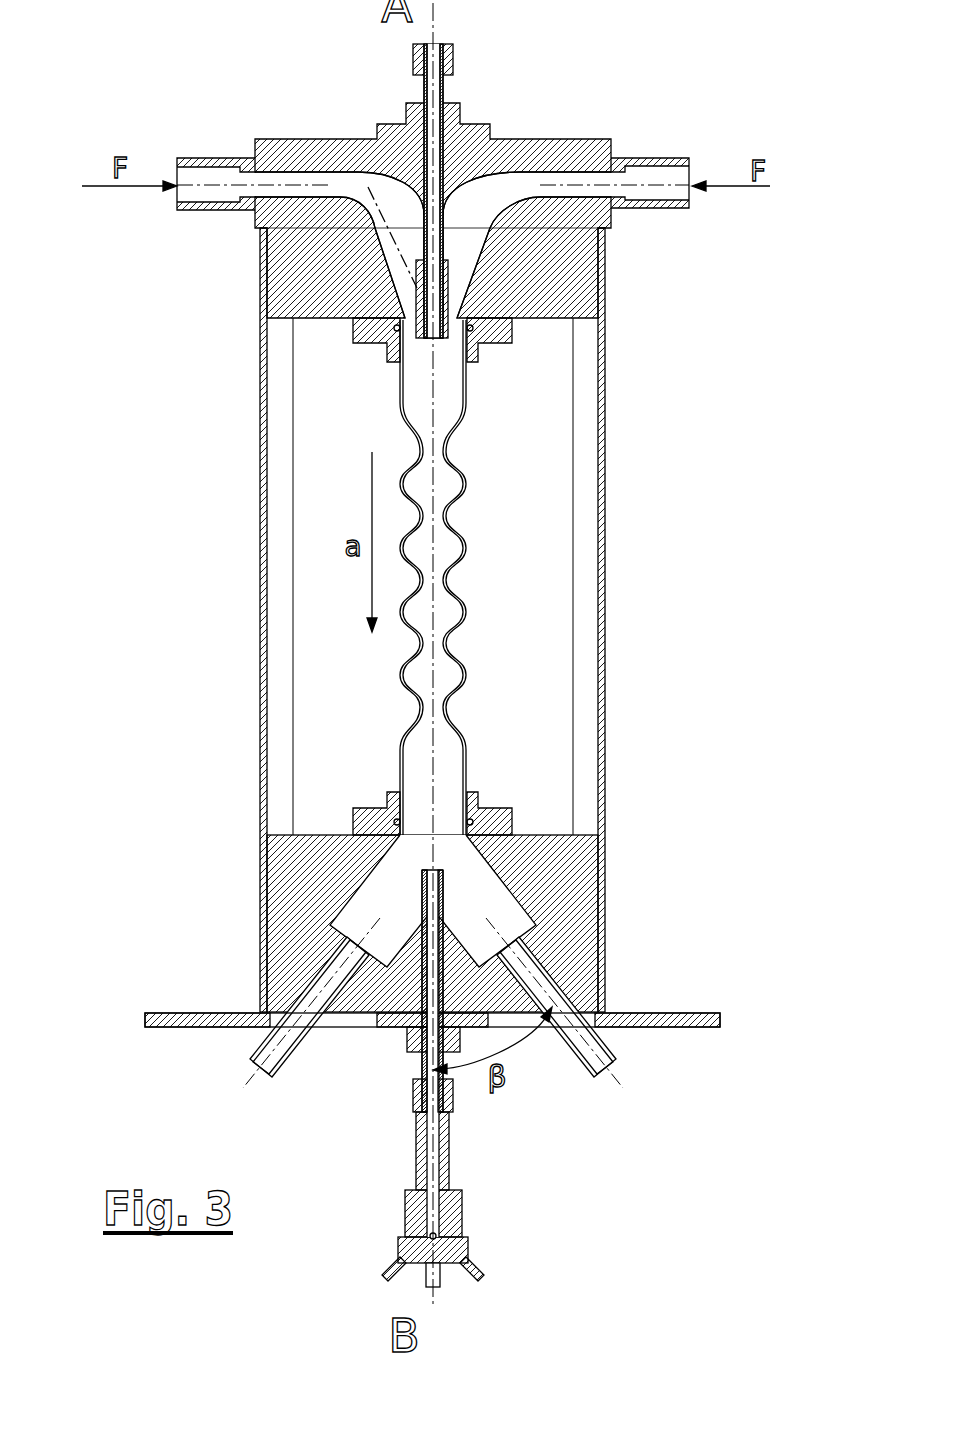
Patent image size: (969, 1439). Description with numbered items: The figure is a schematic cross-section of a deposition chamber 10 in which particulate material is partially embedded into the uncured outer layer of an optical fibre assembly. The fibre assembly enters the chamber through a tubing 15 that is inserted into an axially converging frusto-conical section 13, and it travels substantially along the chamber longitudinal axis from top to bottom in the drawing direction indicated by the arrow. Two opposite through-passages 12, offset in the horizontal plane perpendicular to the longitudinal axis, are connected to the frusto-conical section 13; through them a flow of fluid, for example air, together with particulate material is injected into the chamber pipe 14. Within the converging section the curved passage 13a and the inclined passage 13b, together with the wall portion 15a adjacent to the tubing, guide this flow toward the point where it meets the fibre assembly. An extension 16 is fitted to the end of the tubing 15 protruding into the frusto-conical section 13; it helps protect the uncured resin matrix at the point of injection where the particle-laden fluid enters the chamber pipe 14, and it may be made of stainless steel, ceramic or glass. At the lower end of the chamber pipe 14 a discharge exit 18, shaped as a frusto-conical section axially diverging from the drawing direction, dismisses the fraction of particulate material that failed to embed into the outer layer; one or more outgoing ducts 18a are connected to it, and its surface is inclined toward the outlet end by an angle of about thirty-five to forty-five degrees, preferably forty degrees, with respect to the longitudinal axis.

The deposition chamber 10 is at (223, 707).
The through-passage 12 is at (267, 188).
The frusto-conical section 13 is at (352, 250).
The curved inlet channel 13a is at (482, 210).
The inclined channel 13b is at (385, 285).
The chamber pipe 14 is at (468, 592).
The tubing 15 is at (432, 110).
The channel wall 15a is at (410, 185).
The extension 16 is at (447, 327).
The discharge exit 18 is at (502, 910).
The outgoing duct 18a is at (555, 1002).